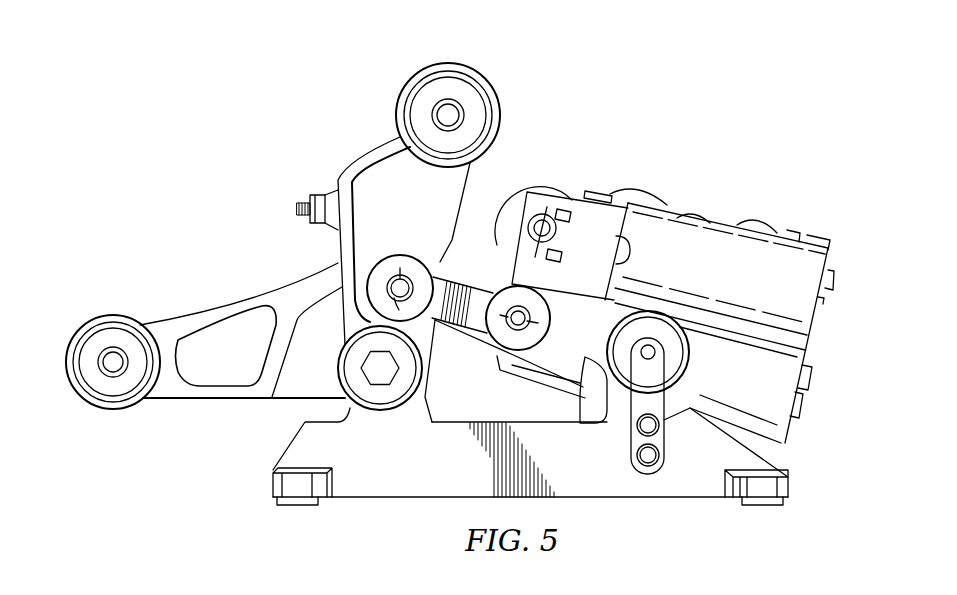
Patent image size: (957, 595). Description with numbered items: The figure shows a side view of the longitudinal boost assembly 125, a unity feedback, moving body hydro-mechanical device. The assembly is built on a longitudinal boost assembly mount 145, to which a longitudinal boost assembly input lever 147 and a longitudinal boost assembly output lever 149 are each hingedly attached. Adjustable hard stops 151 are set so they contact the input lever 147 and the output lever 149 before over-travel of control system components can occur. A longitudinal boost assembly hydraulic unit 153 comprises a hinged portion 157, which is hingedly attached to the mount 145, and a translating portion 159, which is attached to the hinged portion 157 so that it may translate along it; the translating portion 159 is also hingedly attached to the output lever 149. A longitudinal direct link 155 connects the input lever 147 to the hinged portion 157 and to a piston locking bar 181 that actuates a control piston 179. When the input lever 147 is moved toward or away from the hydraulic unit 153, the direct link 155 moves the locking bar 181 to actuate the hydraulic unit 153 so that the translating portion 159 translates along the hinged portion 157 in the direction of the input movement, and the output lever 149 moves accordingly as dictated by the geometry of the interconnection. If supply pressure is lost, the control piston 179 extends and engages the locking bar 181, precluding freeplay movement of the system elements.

The longitudinal boost assembly 125 is at (337, 128).
The longitudinal boost assembly mount 145 is at (680, 484).
The longitudinal boost assembly input lever 147 is at (447, 63).
The longitudinal boost assembly output lever 149 is at (213, 300).
The longitudinal boost assembly adjustable hard stops 151 is at (312, 195).
The longitudinal boost assembly hydraulic unit 153 is at (720, 212).
The longitudinal direct link 155 is at (470, 343).
The hinged portion 157 is at (580, 412).
The translating portion 159 is at (757, 226).
The control piston 179 is at (626, 248).
The piston locking bar 181 is at (590, 212).